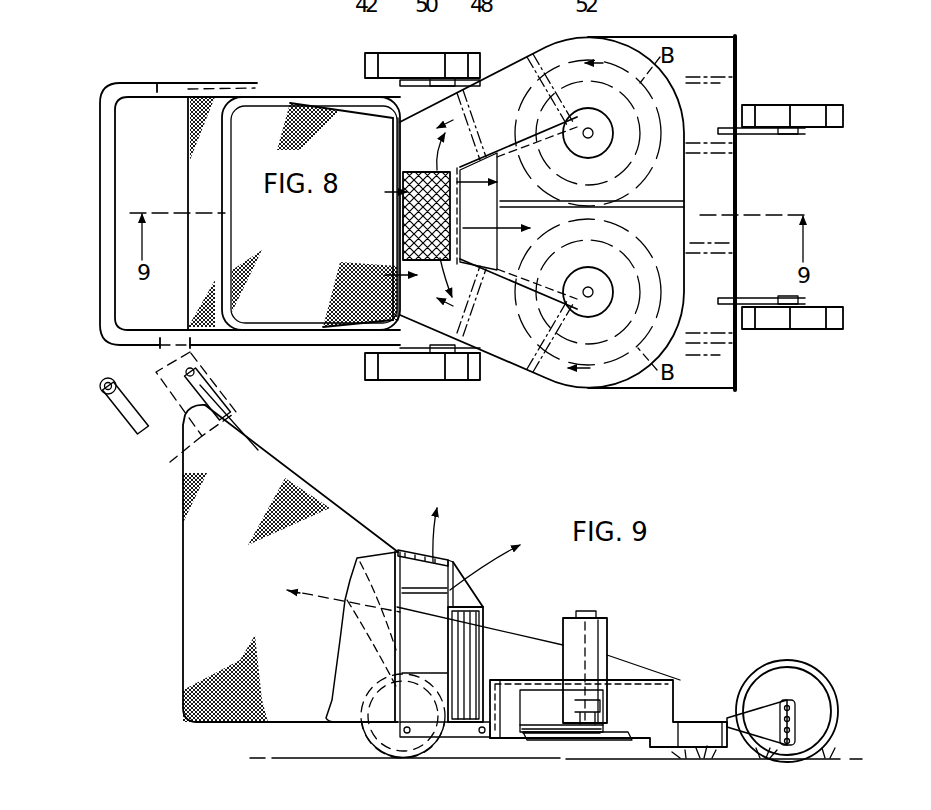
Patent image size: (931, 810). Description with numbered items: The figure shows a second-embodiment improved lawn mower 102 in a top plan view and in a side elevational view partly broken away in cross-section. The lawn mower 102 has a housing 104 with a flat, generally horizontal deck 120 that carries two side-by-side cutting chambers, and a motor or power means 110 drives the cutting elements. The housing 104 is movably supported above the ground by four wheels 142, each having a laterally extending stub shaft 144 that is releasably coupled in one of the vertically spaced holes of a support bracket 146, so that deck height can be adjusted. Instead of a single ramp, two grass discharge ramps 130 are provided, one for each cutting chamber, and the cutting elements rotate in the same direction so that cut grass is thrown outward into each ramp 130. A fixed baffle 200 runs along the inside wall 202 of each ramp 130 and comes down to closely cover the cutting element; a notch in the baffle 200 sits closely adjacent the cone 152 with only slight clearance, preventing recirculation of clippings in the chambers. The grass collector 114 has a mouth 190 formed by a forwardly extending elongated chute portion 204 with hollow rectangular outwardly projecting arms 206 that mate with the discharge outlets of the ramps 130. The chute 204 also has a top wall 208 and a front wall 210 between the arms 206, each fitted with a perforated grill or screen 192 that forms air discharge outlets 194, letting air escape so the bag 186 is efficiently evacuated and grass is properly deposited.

In FIG. 8, the lawn mower 102 is at (628, 394).
In FIG. 9, the lawn mower 102 is at (607, 609).
In FIG. 8, the housing 104 is at (740, 76).
In FIG. 8, the motor or power means 110 is at (598, 168).
In FIG. 8, the grass collector 114 is at (320, 138).
In FIG. 9, the grass collector 114 is at (352, 516).
In FIG. 8, the deck 120 is at (718, 53).
In FIG. 8, the grass discharge ramp 130 is at (550, 75).
In FIG. 9, the grass discharge ramp 130 is at (541, 631).
In FIG. 8, the wheel 142 is at (470, 56).
In FIG. 9, the wheel 142 is at (782, 663).
In FIG. 8, the stub shaft 144 is at (788, 135).
In FIG. 8, the support bracket 146 is at (768, 134).
In FIG. 9, the support bracket 146 is at (723, 717).
In FIG. 9, the cone 152 is at (592, 742).
In FIG. 8, the bag 186 is at (316, 316).
In FIG. 9, the bag 186 is at (278, 482).
In FIG. 8, the mouth 190 is at (397, 155).
In FIG. 8, the perforated grill or screen 192 is at (403, 197).
In FIG. 9, the perforated grill or screen 192 is at (457, 572).
In FIG. 8, the air discharge outlet 194 is at (403, 225).
In FIG. 9, the air discharge outlet 194 is at (457, 590).
In FIG. 8, the fixed baffle 200 is at (532, 278).
In FIG. 9, the fixed baffle 200 is at (503, 729).
In FIG. 9, the inside wall 202 is at (468, 638).
In FIG. 8, the chute portion 204 is at (462, 122).
In FIG. 8, the arm 206 is at (553, 104).
In FIG. 8, the top wall 208 is at (418, 277).
In FIG. 9, the top wall 208 is at (545, 731).
In FIG. 8, the front wall 210 is at (502, 194).